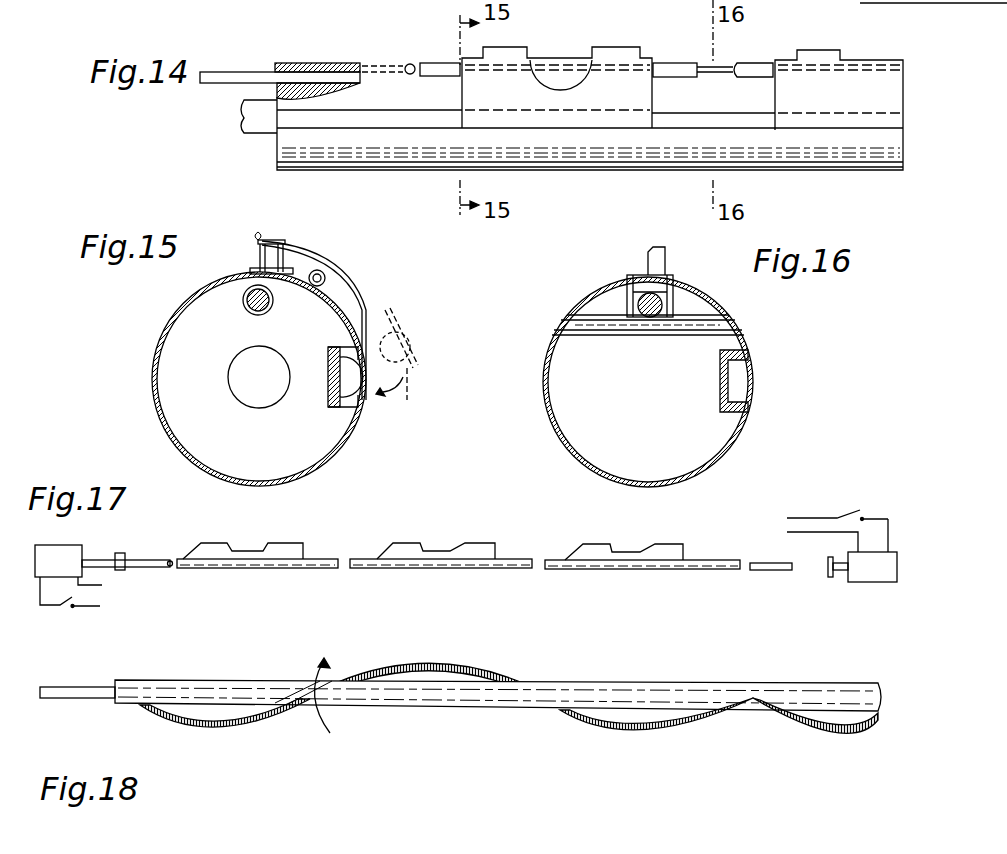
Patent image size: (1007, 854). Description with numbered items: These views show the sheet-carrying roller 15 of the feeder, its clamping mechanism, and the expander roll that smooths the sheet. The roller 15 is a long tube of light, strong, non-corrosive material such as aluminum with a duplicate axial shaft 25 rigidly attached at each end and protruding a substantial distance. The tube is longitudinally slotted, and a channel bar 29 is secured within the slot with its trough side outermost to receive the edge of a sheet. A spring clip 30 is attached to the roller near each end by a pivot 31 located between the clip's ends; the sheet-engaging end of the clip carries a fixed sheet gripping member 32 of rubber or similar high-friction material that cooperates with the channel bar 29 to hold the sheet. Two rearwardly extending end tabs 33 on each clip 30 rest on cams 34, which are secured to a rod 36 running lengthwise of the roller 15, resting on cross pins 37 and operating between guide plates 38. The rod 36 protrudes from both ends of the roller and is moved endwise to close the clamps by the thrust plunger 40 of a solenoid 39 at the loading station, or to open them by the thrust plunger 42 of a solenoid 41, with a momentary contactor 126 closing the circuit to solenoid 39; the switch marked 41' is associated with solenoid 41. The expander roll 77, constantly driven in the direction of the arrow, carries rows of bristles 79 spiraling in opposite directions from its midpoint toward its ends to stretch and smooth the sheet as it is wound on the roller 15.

In FIG. 14, the roller 15 is at (377, 157).
In FIG. 15, the roller 15 is at (158, 380).
In FIG. 16, the roller 15 is at (565, 442).
In FIG. 14, the axial shaft 25 is at (257, 123).
In FIG. 15, the axial shaft 25 is at (248, 390).
In FIG. 14, the channel bar 29 is at (393, 115).
In FIG. 15, the channel bar 29 is at (330, 407).
In FIG. 16, the channel bar 29 is at (730, 385).
In FIG. 14, the spring clip 30 is at (783, 92).
In FIG. 15, the spring clip 30 is at (360, 296).
In FIG. 14, the pivot 31 is at (405, 64).
In FIG. 15, the pivot 31 is at (323, 280).
In FIG. 14, the sheet gripping member 32 is at (590, 60).
In FIG. 15, the sheet gripping member 32 is at (353, 383).
In FIG. 16, the sheet gripping member 32 is at (665, 258).
In FIG. 15, the end tab 33 is at (262, 242).
In FIG. 15, the cam 34 is at (275, 253).
In FIG. 17, the cam 34 is at (263, 548).
In FIG. 14, the rod 36 is at (240, 77).
In FIG. 15, the rod 36 is at (247, 303).
In FIG. 16, the rod 36 is at (647, 315).
In FIG. 17, the rod 36 is at (153, 568).
In FIG. 16, the cross pin 37 is at (687, 327).
In FIG. 16, the guide plate 38 is at (627, 305).
In FIG. 17, the solenoid 39 is at (842, 550).
In FIG. 17, the thrust plunger 40 is at (845, 573).
In FIG. 17, the solenoid 41 is at (104, 561).
In FIG. 17, the switch 41' is at (69, 617).
In FIG. 17, the thrust plunger 42 is at (97, 560).
In FIG. 18, the expander roll 77 is at (232, 683).
In FIG. 18, the bristles 79 is at (693, 726).
In FIG. 17, the momentary contactor 126 is at (850, 512).